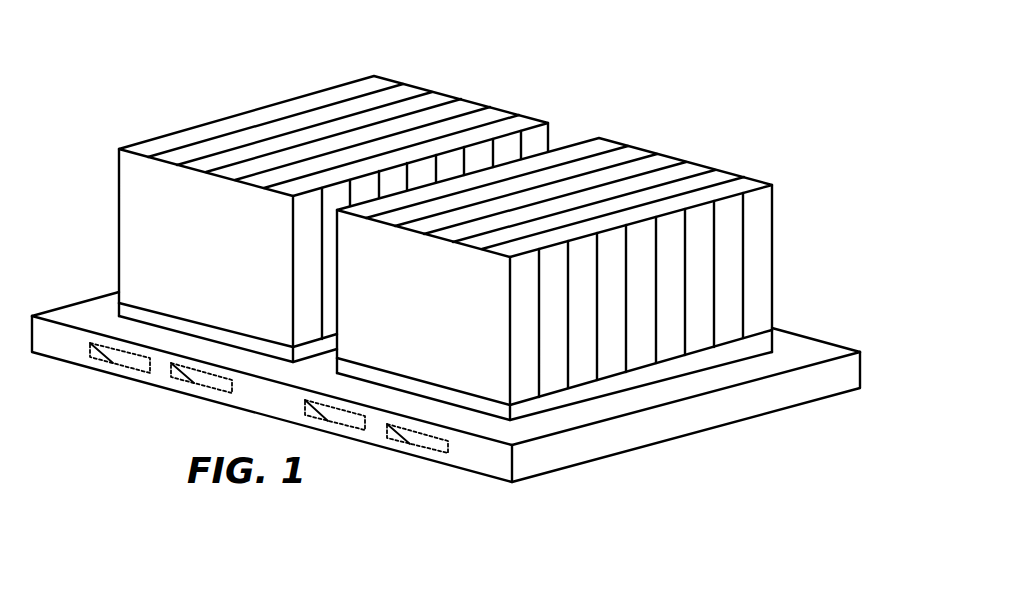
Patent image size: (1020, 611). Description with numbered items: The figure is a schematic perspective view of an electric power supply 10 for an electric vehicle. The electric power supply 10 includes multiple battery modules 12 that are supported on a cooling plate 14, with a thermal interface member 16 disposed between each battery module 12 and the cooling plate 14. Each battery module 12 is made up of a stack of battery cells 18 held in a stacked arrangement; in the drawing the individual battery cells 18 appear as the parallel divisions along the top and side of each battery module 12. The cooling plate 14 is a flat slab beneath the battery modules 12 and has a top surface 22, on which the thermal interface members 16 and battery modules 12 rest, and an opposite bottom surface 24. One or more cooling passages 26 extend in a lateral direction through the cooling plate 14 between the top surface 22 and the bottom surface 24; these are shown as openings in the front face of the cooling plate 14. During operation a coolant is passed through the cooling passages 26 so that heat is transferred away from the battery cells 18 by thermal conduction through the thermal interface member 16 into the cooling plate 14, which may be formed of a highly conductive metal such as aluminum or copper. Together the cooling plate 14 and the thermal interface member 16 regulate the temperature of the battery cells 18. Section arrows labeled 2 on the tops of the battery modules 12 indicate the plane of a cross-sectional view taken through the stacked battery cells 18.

The electric power supply 10 is at (120, 100).
The battery module 12 is at (119, 230).
The cooling plate 14 is at (150, 383).
The thermal interface member 16 is at (119, 308).
The battery cells 18 is at (280, 103).
The top surface 22 is at (815, 348).
The bottom surface 24 is at (820, 400).
The cooling passages 26 is at (448, 447).
The section line for FIG. 2 is at (318, 75).